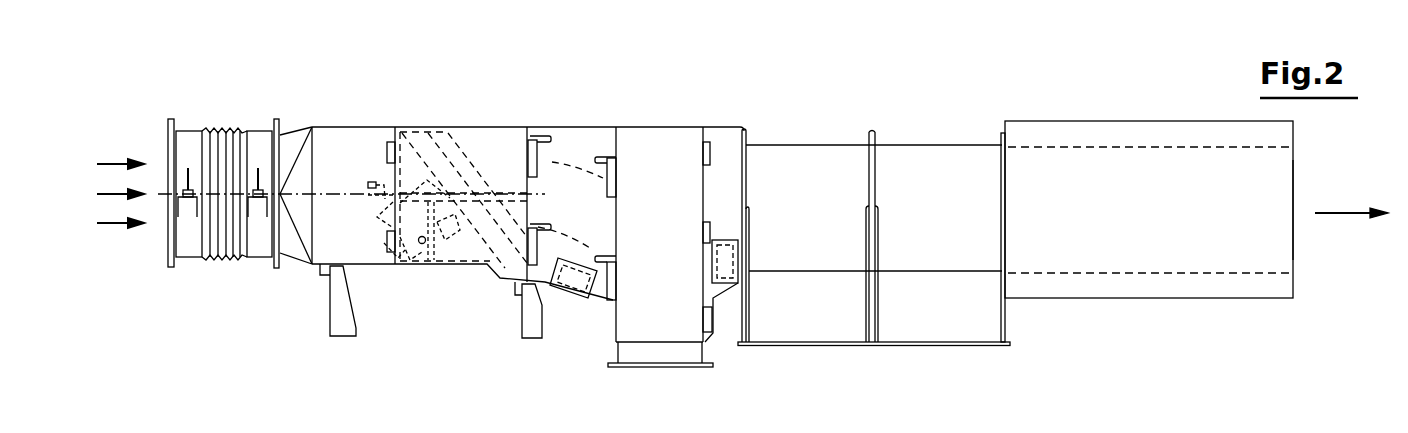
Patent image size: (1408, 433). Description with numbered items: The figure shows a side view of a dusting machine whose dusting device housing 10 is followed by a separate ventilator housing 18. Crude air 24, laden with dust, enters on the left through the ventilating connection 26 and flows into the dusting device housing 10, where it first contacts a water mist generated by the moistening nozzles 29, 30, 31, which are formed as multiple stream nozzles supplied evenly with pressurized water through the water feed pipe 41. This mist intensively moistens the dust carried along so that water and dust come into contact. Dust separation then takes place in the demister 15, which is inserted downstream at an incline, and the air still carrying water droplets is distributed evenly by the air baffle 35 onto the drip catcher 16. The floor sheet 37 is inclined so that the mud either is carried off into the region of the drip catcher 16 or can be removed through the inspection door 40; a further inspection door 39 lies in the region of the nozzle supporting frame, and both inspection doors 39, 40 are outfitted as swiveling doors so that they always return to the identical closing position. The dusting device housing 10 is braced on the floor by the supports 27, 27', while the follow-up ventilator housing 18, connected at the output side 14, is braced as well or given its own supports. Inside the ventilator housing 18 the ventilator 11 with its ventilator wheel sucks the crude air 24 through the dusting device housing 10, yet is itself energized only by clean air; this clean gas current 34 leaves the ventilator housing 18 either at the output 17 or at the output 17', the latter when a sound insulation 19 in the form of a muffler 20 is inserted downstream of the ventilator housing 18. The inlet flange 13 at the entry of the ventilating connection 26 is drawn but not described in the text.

The dusting device housing 10 is at (289, 326).
The ventilator 11 is at (918, 162).
The inlet flange 13 is at (168, 147).
The output side 14 is at (742, 170).
The demister 15 is at (425, 145).
The drip catcher 16 is at (653, 148).
The output 17 is at (1147, 197).
The output 17' is at (1340, 195).
The ventilator housing 18 is at (935, 346).
The sound insulation 19 is at (1150, 258).
The muffler 20 is at (1166, 273).
The crude air 24 is at (123, 230).
The ventilating connection 26 is at (228, 232).
The supports 27 is at (338, 340).
The supports 27' is at (516, 349).
The moistening nozzle 29 is at (429, 262).
The moistening nozzle 30 is at (372, 183).
The moistening nozzle 31 is at (393, 254).
The clean gas current 34 is at (748, 178).
The air baffle 35 is at (568, 162).
The floor sheet 37 is at (543, 284).
The inspection door 39 is at (440, 190).
The inspection door 40 is at (582, 283).
The water feed pipe 41 is at (508, 196).